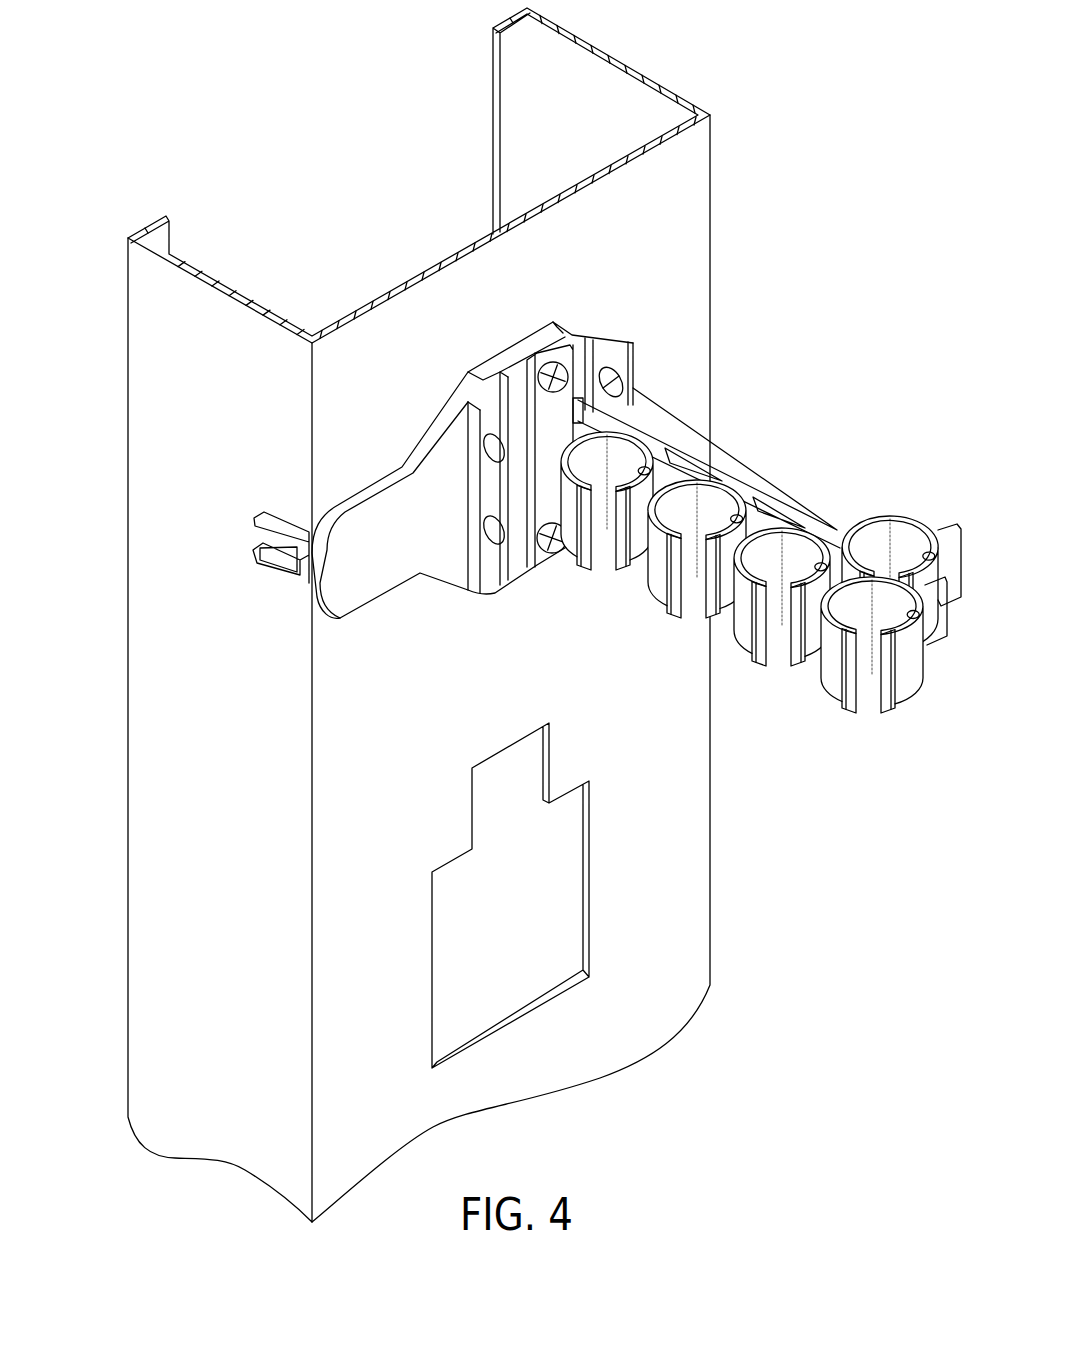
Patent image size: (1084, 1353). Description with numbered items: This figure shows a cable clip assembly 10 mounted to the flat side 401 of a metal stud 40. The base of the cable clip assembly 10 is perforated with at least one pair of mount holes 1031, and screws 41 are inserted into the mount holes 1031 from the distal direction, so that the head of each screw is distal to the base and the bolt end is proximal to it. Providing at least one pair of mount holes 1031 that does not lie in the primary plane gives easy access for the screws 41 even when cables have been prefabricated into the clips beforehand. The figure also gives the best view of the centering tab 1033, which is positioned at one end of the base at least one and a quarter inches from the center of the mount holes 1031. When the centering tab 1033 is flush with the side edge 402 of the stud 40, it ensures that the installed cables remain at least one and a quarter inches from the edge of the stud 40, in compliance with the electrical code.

The metal stud 40 is at (421, 615).
The screws 41 is at (427, 452).
The mount holes 1031 is at (628, 387).
The centering tab 1033 is at (287, 580).
The cable clip assembly 10 is at (932, 492).
The flat side 401 is at (667, 823).
The side edge 402 is at (170, 808).